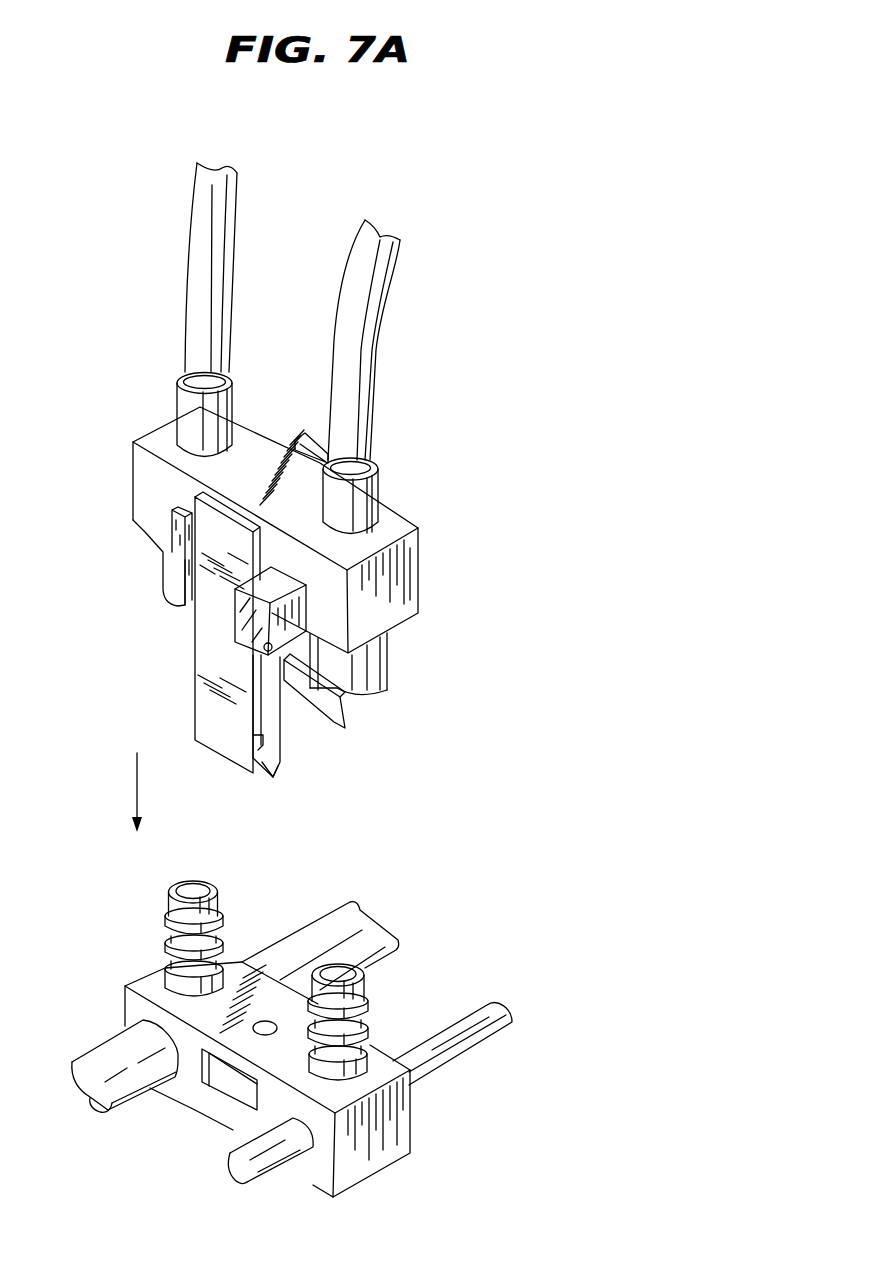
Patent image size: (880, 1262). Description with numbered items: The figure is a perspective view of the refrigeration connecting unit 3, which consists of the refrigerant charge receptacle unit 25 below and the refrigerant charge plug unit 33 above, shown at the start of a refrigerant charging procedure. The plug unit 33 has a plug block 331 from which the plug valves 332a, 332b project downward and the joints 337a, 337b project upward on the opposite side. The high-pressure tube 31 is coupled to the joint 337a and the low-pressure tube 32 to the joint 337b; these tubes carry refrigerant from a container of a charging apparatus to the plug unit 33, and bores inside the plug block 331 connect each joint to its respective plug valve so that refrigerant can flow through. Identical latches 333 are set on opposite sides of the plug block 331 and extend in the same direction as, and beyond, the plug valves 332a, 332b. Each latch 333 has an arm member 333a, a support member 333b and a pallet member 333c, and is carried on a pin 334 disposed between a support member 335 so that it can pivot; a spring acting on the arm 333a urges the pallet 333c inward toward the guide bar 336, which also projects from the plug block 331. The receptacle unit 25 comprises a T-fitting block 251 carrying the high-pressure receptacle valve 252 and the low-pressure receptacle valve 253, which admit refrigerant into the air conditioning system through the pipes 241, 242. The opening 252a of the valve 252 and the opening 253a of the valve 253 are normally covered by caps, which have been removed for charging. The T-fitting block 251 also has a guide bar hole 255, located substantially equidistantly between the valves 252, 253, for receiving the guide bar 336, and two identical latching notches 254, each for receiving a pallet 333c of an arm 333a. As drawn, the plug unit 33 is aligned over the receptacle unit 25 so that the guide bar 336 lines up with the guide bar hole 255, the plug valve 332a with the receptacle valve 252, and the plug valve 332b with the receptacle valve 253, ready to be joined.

The refrigeration connecting unit 3 is at (486, 239).
The high-pressure tube 31 is at (373, 280).
The low-pressure tube 32 is at (202, 202).
The refrigerant charge plug unit 33 is at (465, 502).
The plug block 331 is at (420, 557).
The plug valve 332a is at (390, 660).
The plug valve 332b is at (166, 553).
The latch 333 is at (300, 438).
The arm member 333a is at (204, 581).
The support member 333b is at (292, 700).
The pallet member 333c is at (260, 760).
The pin 334 is at (180, 601).
The support member 335 is at (177, 603).
The guide bar 336 is at (280, 747).
The joint 337a is at (378, 480).
The joint 337b is at (188, 413).
The charge receptacle unit 25 is at (445, 1130).
The T-fitting block 251 is at (372, 1157).
The high-pressure receptacle valve 252 is at (363, 1023).
The opening 252a is at (365, 977).
The low-pressure receptacle valve 253 is at (176, 910).
The opening 253a is at (217, 890).
The latching notch 254 is at (245, 1095).
The guide bar hole 255 is at (257, 1030).
The pipe 241 is at (515, 1026).
The pipe 242 is at (342, 925).